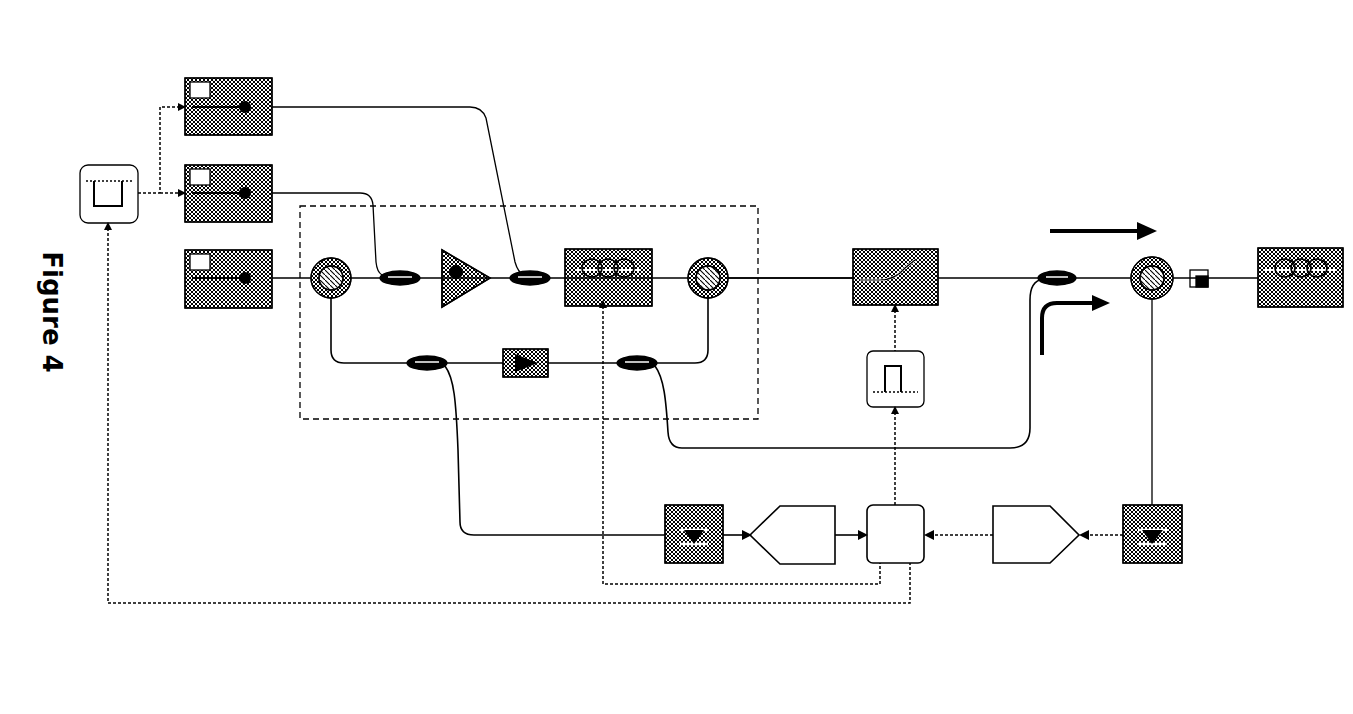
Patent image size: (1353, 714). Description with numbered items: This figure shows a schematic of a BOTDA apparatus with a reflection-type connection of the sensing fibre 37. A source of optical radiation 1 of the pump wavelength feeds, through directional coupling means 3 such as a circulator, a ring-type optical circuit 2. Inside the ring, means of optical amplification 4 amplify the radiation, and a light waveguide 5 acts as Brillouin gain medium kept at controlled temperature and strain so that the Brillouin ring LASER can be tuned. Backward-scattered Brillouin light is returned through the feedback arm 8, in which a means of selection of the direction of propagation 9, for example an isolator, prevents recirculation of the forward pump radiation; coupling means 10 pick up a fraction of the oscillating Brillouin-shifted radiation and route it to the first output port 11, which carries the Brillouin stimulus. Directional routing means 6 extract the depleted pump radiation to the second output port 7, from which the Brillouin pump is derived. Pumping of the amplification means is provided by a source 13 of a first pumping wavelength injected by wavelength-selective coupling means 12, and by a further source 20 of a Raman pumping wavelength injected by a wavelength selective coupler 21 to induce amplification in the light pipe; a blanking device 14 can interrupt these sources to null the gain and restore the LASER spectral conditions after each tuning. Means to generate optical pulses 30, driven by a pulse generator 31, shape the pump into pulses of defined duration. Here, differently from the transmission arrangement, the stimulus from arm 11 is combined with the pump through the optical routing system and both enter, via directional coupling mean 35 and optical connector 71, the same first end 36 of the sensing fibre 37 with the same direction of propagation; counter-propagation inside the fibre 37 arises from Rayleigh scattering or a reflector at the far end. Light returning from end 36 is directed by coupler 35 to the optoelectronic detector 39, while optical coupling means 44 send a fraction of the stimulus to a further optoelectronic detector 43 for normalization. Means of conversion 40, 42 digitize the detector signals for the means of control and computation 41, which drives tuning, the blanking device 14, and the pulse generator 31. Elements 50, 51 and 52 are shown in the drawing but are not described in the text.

The source of optical radiation 1 is at (185, 308).
The ring-type optical circuit 2 is at (703, 206).
The directional coupling means 3 is at (345, 292).
The means of optical amplification 4 is at (470, 262).
The light waveguide 5 is at (618, 249).
The directional routing means 6 is at (715, 258).
The second output port 7 is at (780, 285).
The feedback arm 8 is at (712, 345).
The means of selection of the direction of propagation 9 is at (505, 378).
The coupling means 10 is at (648, 358).
The first output port 11 is at (790, 448).
The wavelength-selective coupling means 12 is at (405, 270).
The source of pumping radiation 13 is at (272, 165).
The blanking device 14 is at (100, 165).
The further source of pumping radiation 20 is at (272, 78).
The wavelength selective coupler 21 is at (532, 270).
The means to generate optical pulses 30 is at (875, 249).
The pulse generator 31 is at (928, 380).
The directional coupling mean 35 is at (1165, 262).
The first end of the sensing fibre 36 is at (1255, 290).
The sensing fibre 37 is at (1300, 248).
The optoelectronic detector 39 is at (1155, 563).
The means of conversion 40 is at (1025, 563).
The means of control and computation 41 is at (925, 563).
The means of conversion 42 is at (800, 506).
The further optoelectronic detector 43 is at (665, 505).
The optical coupling means 44 is at (425, 372).
The optical coupler 50 is at (1045, 272).
The backscattered light direction 51 is at (1070, 310).
The forward light direction 52 is at (1090, 228).
The optical connector 71 is at (1208, 270).